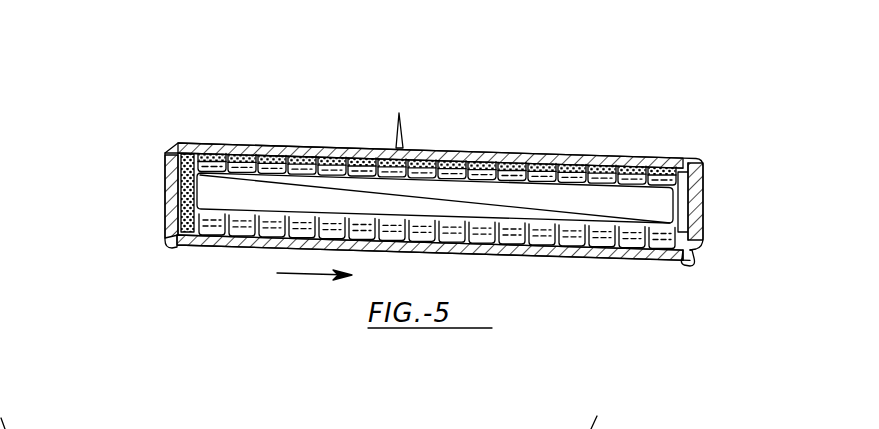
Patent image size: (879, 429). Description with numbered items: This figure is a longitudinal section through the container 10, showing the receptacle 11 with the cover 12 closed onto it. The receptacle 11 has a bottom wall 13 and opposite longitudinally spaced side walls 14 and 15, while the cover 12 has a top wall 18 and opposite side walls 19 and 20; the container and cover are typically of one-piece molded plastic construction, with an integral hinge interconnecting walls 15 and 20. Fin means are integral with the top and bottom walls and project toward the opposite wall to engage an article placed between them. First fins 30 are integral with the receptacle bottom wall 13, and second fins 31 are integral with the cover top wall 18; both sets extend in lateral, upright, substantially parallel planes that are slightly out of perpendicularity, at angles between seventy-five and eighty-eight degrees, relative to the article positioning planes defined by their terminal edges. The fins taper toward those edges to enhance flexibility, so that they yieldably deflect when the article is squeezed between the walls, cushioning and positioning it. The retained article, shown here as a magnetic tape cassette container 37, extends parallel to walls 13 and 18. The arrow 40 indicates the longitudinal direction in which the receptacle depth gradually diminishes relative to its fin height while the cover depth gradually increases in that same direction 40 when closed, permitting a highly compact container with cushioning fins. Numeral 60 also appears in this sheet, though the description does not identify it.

The container 10 is at (456, 128).
The receptacle 11 is at (230, 252).
The cover 12 is at (518, 145).
The bottom wall 13 is at (608, 249).
The side wall 14 is at (165, 213).
The side wall 15 is at (712, 243).
The top wall 18 is at (328, 148).
The side wall 19 is at (167, 149).
The side wall 20 is at (703, 198).
The first fins 30 is at (546, 224).
The second fins 31 is at (403, 118).
The magnetic tape cassette container 37 is at (627, 196).
The arrow 40 is at (293, 271).
The element 60 is at (608, 408).